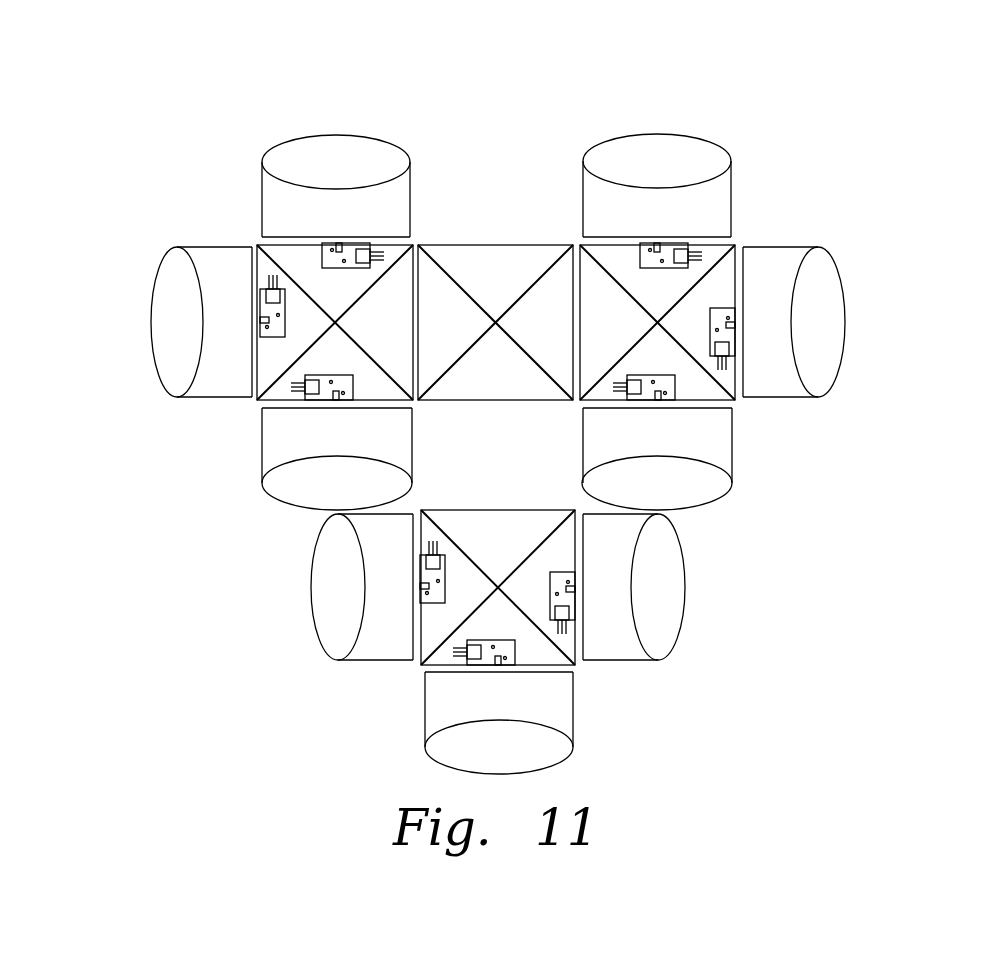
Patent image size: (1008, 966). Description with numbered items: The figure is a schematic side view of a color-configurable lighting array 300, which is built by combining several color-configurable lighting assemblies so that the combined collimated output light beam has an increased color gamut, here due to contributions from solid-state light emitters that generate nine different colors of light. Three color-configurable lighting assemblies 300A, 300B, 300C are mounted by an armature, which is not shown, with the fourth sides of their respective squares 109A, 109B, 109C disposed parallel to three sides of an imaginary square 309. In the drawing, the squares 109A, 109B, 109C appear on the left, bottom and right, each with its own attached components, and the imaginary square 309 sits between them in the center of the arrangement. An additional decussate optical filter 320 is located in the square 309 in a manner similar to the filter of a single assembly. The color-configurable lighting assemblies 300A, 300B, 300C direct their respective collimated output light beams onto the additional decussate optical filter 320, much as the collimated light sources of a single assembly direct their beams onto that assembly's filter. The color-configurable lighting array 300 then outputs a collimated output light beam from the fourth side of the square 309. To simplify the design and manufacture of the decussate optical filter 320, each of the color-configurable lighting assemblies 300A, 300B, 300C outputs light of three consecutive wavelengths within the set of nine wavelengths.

The color-configurable lighting array 300 is at (148, 117).
The color-configurable lighting assembly 300A is at (223, 428).
The color-configurable lighting assembly 300B is at (377, 695).
The color-configurable lighting assembly 300C is at (767, 418).
The imaginary square 309 is at (513, 243).
The additional decussate optical filter 320 is at (513, 279).
The square 109A is at (388, 402).
The square 109B is at (553, 668).
The square 109C is at (600, 407).